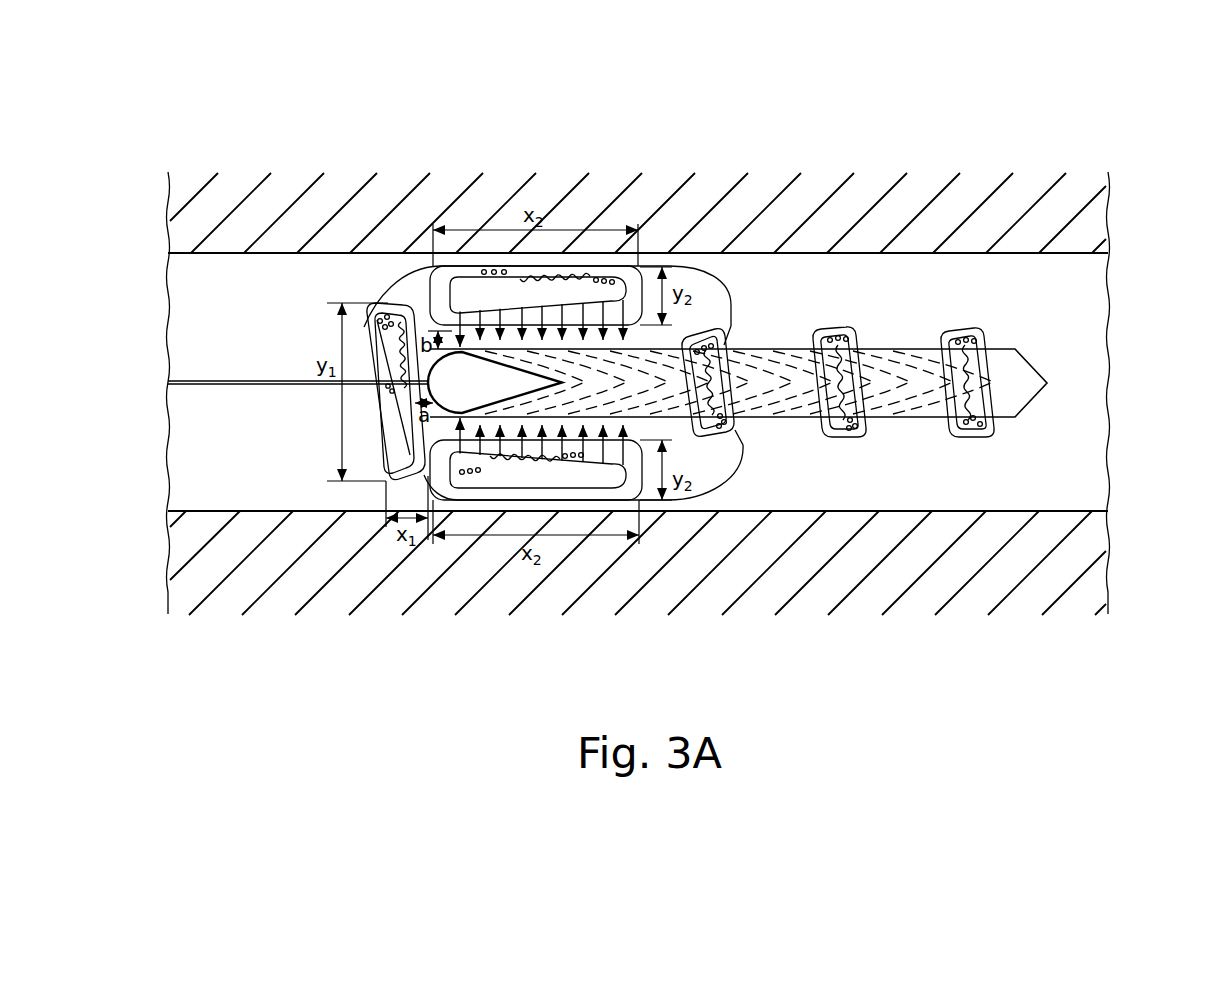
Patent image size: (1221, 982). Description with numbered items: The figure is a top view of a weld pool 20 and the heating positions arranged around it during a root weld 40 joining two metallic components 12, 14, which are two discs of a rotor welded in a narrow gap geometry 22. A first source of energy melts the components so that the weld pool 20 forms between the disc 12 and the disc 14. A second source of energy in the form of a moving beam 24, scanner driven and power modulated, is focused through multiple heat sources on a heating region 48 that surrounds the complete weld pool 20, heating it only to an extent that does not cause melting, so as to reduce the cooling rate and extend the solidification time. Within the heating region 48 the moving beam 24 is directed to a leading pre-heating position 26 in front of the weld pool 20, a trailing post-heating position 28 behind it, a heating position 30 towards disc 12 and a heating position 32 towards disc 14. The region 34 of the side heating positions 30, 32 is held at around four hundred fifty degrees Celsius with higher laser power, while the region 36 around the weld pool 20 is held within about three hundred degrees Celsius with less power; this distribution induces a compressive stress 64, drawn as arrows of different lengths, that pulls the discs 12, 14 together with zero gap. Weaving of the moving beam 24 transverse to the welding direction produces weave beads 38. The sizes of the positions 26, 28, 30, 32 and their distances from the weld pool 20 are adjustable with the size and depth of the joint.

The metallic component 12 is at (638, 213).
The metallic component 14 is at (638, 563).
The weld pool 20 is at (533, 382).
The narrow gap geometry 22 is at (1076, 292).
The moving beam 24 is at (377, 393).
The leading heating position 26 is at (364, 303).
The trailing heating position 28 is at (746, 428).
The heating position towards disc 12 30 is at (639, 263).
The heating position towards disc 14 32 is at (443, 503).
The region of heating positions 34 is at (429, 297).
The region around the weld pool 36 is at (643, 309).
The weave beads 38 is at (584, 266).
The root weld 40 is at (1003, 137).
The heating region 48 is at (735, 318).
The compressive stress 64 is at (363, 330).